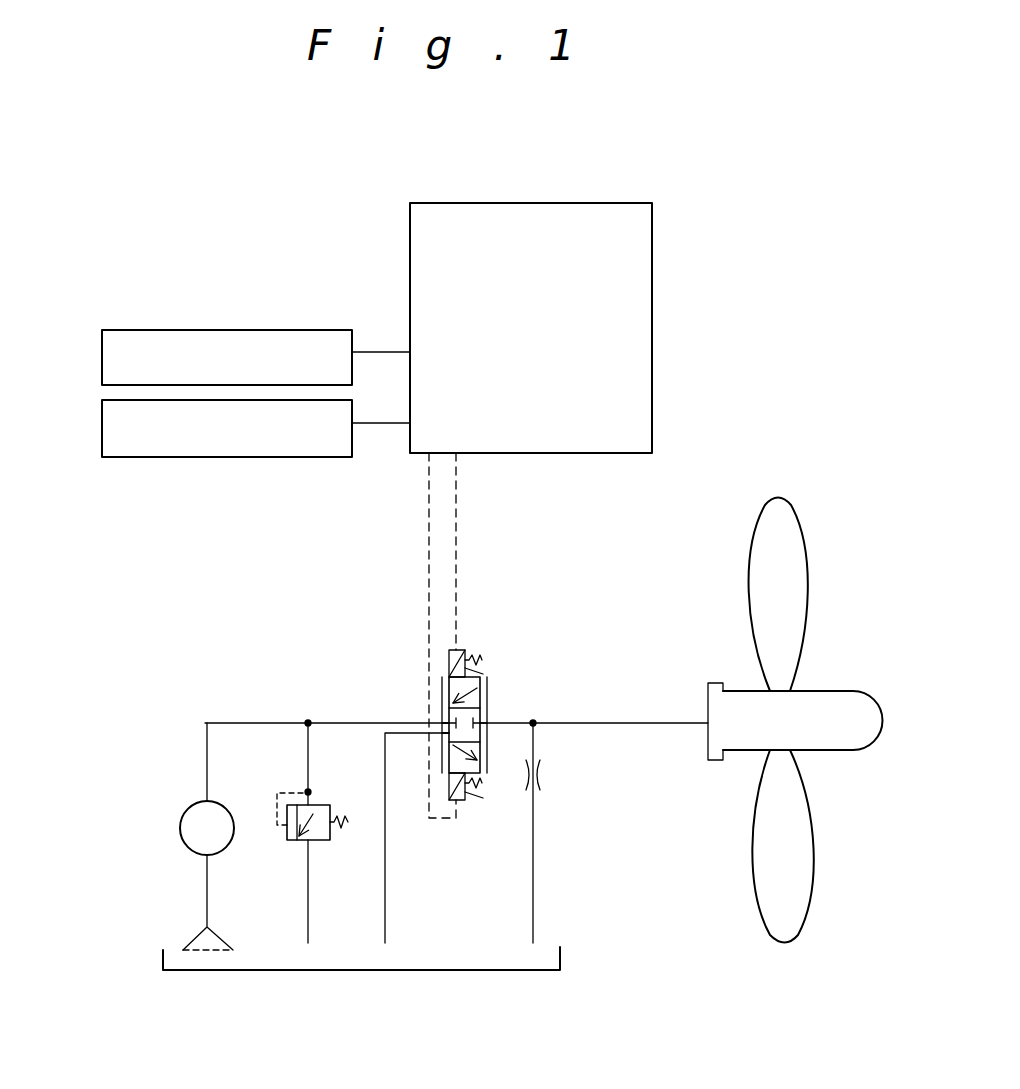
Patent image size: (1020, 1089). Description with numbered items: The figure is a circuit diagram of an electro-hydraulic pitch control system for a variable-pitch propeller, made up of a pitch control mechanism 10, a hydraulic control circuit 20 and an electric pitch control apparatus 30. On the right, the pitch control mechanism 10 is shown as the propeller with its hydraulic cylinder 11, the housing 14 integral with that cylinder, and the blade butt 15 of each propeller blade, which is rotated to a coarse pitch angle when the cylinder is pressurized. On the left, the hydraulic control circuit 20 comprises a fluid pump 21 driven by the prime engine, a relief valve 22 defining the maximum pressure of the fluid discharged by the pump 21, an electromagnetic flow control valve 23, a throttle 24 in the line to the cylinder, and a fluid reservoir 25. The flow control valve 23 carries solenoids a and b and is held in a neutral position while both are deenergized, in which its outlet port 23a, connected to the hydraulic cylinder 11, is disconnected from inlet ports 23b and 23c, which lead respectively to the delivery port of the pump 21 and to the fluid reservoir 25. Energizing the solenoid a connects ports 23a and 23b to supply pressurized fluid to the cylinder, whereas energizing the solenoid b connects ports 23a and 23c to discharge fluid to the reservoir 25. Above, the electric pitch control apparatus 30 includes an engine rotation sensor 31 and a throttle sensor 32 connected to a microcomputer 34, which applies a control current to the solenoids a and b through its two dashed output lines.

The pitch control mechanism 10 is at (708, 720).
The hydraulic cylinder 11 is at (814, 691).
The housing 14 is at (748, 698).
The blade butt 15 is at (772, 545).
The hydraulic control circuit 20 is at (373, 814).
The fluid pump 21 is at (230, 810).
The relief valve 22 is at (330, 806).
The electromagnetic flow control valve 23 is at (468, 774).
The outlet port 23a is at (487, 722).
The inlet port 23b is at (445, 718).
The inlet port 23c is at (447, 738).
The throttle 24 is at (538, 782).
The fluid reservoir 25 is at (395, 971).
The electric pitch control apparatus 30 is at (231, 324).
The engine rotation sensor 31 is at (102, 367).
The throttle sensor 32 is at (102, 438).
The microcomputer 34 is at (490, 203).
The solenoid a is at (459, 803).
The solenoid b is at (458, 648).